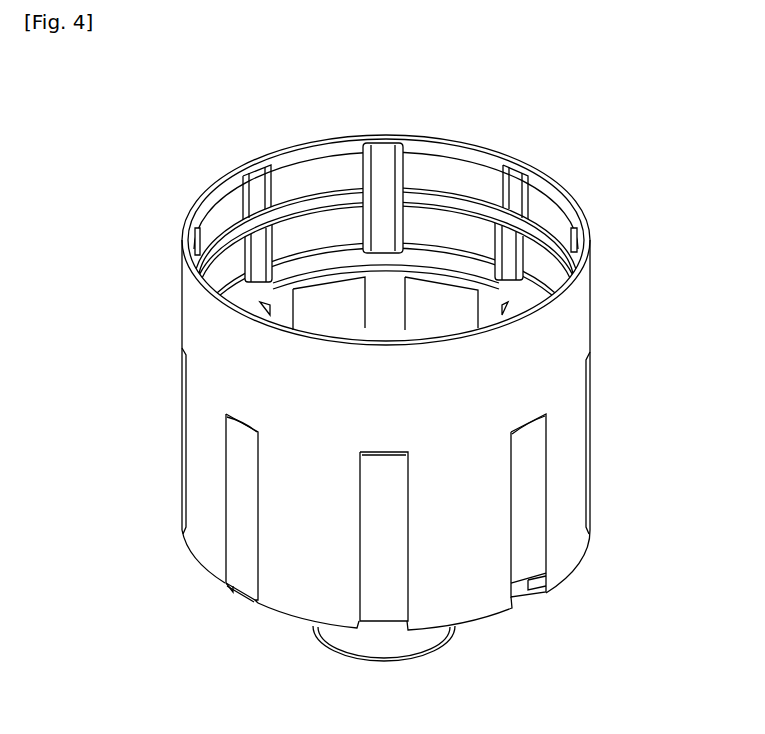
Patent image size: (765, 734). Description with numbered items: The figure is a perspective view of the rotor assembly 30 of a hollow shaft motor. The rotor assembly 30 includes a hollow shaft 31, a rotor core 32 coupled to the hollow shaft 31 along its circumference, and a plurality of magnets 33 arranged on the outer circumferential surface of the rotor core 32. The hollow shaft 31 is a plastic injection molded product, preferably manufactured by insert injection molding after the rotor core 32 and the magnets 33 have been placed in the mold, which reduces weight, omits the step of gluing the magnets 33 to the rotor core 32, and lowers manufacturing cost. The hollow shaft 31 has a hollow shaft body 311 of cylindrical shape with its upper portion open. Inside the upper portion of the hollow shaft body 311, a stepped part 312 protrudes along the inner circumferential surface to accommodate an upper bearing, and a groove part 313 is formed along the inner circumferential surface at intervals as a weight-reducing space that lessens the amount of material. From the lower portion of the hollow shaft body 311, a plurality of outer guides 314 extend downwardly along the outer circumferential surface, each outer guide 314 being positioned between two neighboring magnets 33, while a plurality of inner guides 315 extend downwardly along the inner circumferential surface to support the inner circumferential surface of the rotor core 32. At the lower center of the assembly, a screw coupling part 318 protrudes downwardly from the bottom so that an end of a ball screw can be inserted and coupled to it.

The rotor assembly 30 is at (216, 152).
The hollow shaft 31 is at (449, 435).
The hollow shaft body 311 is at (573, 335).
The stepped part 312 is at (448, 192).
The groove part 313 is at (518, 178).
The outer guide 314 is at (570, 468).
The inner guide 315 is at (487, 300).
The screw coupling part 318 is at (387, 652).
The rotor core 32 is at (322, 296).
The magnet 33 is at (238, 560).